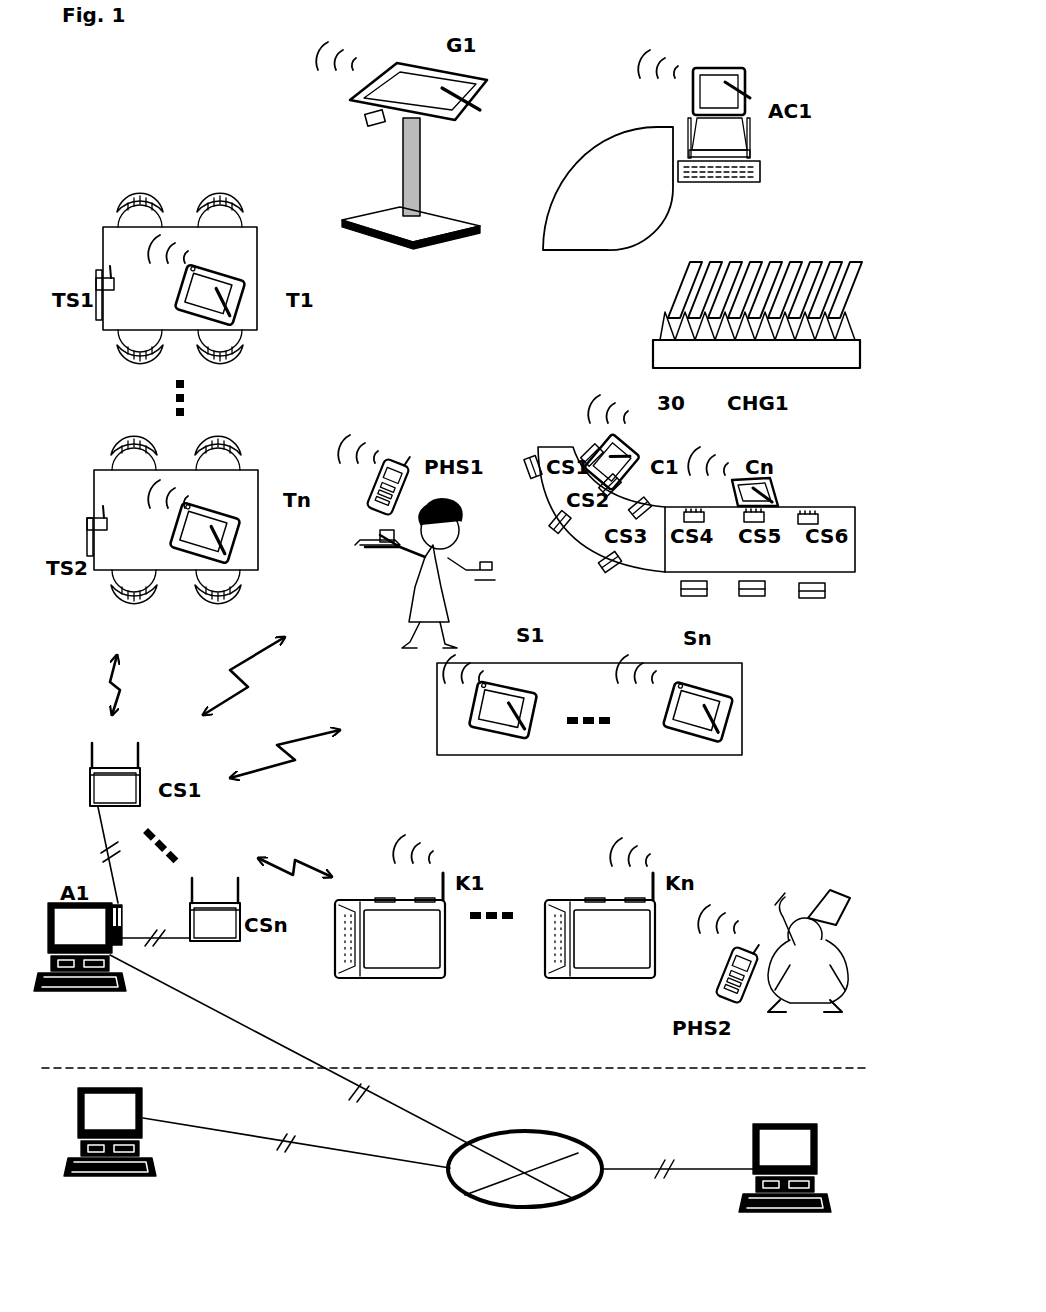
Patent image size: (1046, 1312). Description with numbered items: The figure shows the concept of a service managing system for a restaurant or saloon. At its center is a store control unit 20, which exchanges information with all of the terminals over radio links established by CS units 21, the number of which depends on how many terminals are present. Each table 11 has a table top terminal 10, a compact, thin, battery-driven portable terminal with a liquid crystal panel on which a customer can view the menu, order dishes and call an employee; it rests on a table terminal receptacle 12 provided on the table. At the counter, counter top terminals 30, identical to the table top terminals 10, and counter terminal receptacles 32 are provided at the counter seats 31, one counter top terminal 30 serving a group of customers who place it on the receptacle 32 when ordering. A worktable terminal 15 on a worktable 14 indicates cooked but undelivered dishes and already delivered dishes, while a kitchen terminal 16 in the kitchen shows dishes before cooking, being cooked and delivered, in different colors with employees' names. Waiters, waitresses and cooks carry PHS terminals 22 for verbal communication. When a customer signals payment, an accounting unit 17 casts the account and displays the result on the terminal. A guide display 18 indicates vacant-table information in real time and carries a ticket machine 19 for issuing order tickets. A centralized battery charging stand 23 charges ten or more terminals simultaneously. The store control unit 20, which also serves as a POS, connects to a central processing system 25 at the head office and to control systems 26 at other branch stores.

The table top terminal 10 is at (845, 258).
The table 11 is at (106, 368).
The table terminal receptacle 12 is at (96, 282).
The worktable 14 is at (749, 705).
The worktable terminal 15 is at (490, 763).
The kitchen terminal 16 is at (378, 992).
The accounting unit 17 is at (760, 82).
The guide display 18 is at (493, 80).
The ticket machine 19 is at (366, 118).
The store control unit 20 is at (51, 902).
The CS unit 21 is at (88, 793).
The PHS terminal 22 is at (404, 450).
The centralized battery charging stand 23 is at (797, 352).
The central processing system 25 is at (752, 1152).
The control system 26 is at (78, 1120).
The counter top terminal 30 is at (636, 450).
The counter seat 31 is at (777, 588).
The counter terminal receptacle 32 is at (600, 520).